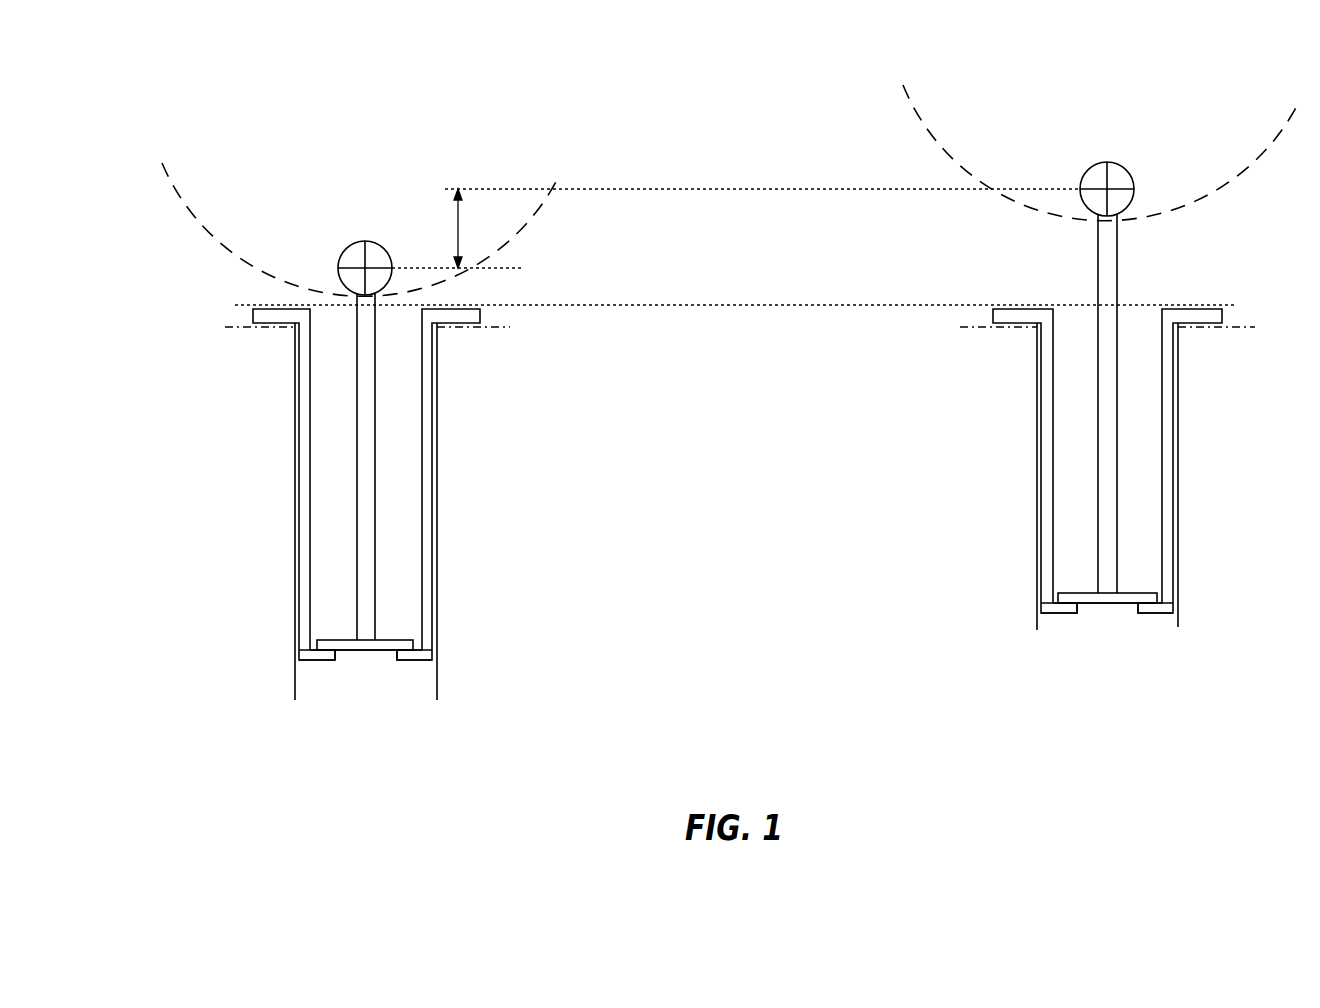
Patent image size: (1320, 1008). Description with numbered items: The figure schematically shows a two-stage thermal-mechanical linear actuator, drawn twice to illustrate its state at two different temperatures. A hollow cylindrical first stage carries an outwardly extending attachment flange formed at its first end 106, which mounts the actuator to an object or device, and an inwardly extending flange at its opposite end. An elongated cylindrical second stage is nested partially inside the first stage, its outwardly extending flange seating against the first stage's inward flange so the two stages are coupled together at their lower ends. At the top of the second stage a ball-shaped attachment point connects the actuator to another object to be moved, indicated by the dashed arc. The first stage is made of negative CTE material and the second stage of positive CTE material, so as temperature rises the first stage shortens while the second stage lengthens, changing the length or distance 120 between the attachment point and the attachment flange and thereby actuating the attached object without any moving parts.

The first end 106 is at (276, 305).
The length or distance 120 is at (458, 225).